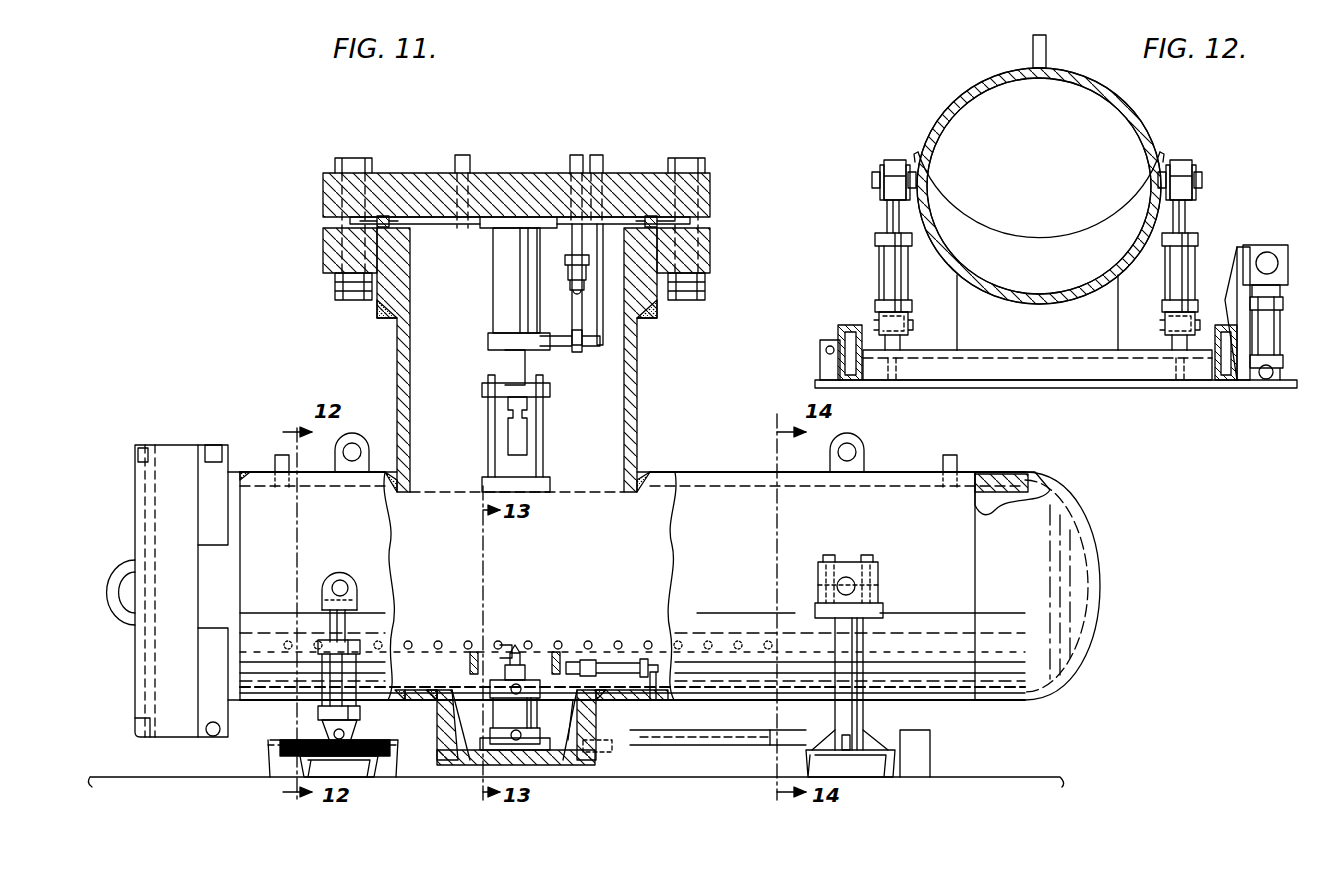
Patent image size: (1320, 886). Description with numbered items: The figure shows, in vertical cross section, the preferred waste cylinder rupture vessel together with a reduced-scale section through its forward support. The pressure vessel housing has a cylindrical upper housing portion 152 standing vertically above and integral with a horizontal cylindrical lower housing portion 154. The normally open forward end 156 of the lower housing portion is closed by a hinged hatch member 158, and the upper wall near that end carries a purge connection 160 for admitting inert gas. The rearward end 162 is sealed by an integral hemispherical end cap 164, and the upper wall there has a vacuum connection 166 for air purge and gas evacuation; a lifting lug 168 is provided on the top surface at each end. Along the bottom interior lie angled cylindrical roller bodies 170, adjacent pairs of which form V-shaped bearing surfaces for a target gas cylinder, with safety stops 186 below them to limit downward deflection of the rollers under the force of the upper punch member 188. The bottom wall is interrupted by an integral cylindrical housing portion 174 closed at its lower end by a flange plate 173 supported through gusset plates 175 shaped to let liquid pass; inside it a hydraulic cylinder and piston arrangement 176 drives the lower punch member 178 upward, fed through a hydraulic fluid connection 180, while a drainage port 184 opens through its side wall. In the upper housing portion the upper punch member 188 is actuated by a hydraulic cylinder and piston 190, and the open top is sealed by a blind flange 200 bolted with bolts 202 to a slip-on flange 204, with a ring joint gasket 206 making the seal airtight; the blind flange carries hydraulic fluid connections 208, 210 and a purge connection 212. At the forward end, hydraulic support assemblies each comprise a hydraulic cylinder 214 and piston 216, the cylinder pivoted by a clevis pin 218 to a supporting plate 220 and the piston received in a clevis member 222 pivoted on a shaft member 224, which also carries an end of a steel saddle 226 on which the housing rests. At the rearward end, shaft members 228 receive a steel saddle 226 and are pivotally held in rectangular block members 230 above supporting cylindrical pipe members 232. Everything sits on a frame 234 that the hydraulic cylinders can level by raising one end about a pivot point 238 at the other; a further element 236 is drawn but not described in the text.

In FIG. 11, the upper housing portion 152 is at (637, 392).
In FIG. 11, the lower housing portion 154 is at (996, 700).
In FIG. 12, the lower housing portion 154 is at (1135, 115).
In FIG. 11, the forward end 156 is at (260, 470).
In FIG. 11, the hatch member 158 is at (165, 495).
In FIG. 11, the purge connection 160 is at (272, 452).
In FIG. 11, the rearward end 162 is at (1010, 505).
In FIG. 11, the hemispherical end cap 164 is at (1085, 535).
In FIG. 11, the vacuum connection 166 is at (958, 455).
In FIG. 11, the lifting lug 168 is at (360, 436).
In FIG. 11, the angled cylindrical roller bodies 170 is at (522, 648).
In FIG. 11, the flange plate 173 is at (566, 760).
In FIG. 11, the integral cylindrical housing portion 174 is at (597, 714).
In FIG. 11, the gusset plates 175 is at (448, 714).
In FIG. 11, the hydraulic cylinder and piston arrangement 176 is at (478, 700).
In FIG. 11, the lower punch member 178 is at (540, 668).
In FIG. 11, the hydraulic fluid connection 180 is at (650, 660).
In FIG. 11, the drainage port 184 is at (632, 752).
In FIG. 11, the safety stops 186 is at (468, 658).
In FIG. 11, the upper punch member 188 is at (518, 455).
In FIG. 11, the hydraulic cylinder and piston 190 is at (488, 340).
In FIG. 11, the blind flange 200 is at (640, 170).
In FIG. 11, the bolts 202 is at (351, 162).
In FIG. 11, the slip-on flange 204 is at (700, 260).
In FIG. 12, the slip-on flange 204 is at (1030, 40).
In FIG. 11, the ring joint gasket 206 is at (650, 218).
In FIG. 11, the hydraulic fluid connection 208 is at (577, 156).
In FIG. 11, the hydraulic fluid connection 210 is at (597, 156).
In FIG. 11, the purge connection 212 is at (462, 156).
In FIG. 11, the hydraulic cylinder 214 is at (328, 672).
In FIG. 12, the hydraulic cylinder 214 is at (883, 270).
In FIG. 11, the piston 216 is at (326, 630).
In FIG. 12, the piston 216 is at (885, 216).
In FIG. 11, the clevis pin 218 is at (328, 732).
In FIG. 12, the clevis pin 218 is at (878, 318).
In FIG. 11, the supporting plate 220 is at (310, 748).
In FIG. 12, the supporting plate 220 is at (898, 343).
In FIG. 11, the clevis member 222 is at (335, 584).
In FIG. 12, the clevis member 222 is at (882, 195).
In FIG. 11, the shaft member 224 is at (343, 580).
In FIG. 12, the shaft member 224 is at (884, 165).
In FIG. 12, the steel saddle 226 is at (1053, 303).
In FIG. 11, the shaft member 228 is at (850, 577).
In FIG. 11, the rectangular block members 230 is at (878, 603).
In FIG. 11, the supporting cylindrical pipe members 232 is at (878, 652).
In FIG. 12, the frame 234 is at (1153, 370).
In FIG. 12, the drive unit 236 is at (1272, 335).
In FIG. 12, the pivot point 238 is at (818, 360).